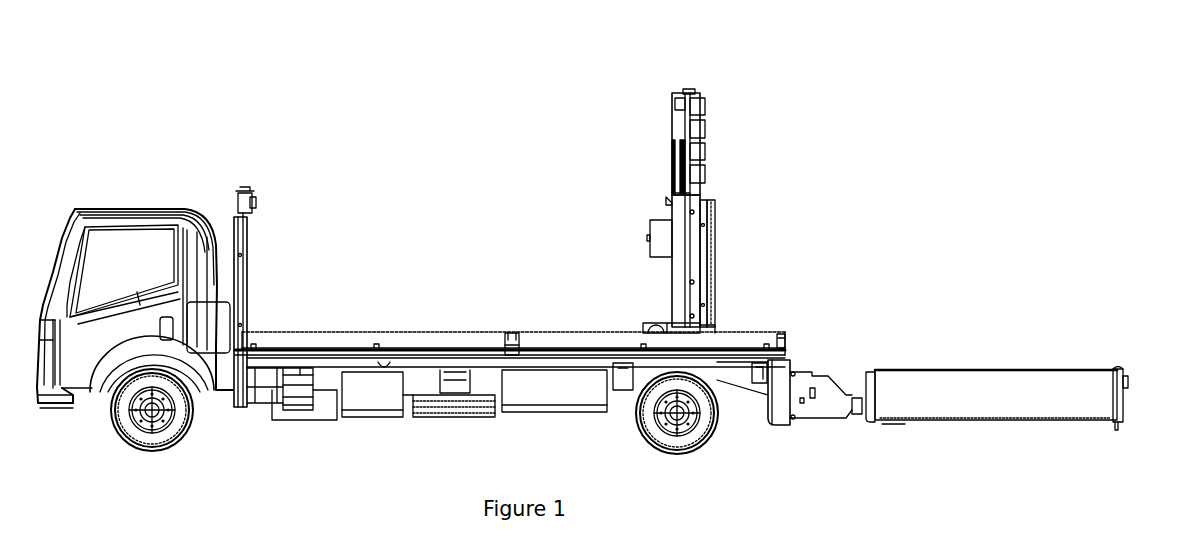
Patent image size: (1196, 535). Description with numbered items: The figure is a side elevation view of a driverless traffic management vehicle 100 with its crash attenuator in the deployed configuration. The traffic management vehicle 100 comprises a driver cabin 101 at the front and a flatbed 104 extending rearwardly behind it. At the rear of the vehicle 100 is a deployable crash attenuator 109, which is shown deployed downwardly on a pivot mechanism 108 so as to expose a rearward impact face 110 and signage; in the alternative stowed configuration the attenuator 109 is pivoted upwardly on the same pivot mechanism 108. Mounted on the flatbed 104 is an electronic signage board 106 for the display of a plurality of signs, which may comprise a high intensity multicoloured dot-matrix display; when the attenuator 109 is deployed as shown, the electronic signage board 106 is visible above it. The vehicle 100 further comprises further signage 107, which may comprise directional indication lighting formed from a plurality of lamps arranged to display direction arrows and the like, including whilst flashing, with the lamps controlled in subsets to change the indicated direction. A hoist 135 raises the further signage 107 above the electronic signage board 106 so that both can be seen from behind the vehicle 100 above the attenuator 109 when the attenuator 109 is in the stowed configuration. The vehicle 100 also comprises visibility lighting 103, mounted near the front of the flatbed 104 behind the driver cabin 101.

The traffic management vehicle 100 is at (843, 84).
The driver cabin 101 is at (153, 208).
The visibility lighting 103 is at (248, 186).
The flatbed 104 is at (470, 332).
The electronic signage board 106 is at (716, 260).
The further signage 107 is at (706, 103).
The hoist 135 is at (670, 103).
The pivot mechanism 108 is at (848, 411).
The deployable crash attenuator 109 is at (1013, 371).
The rearward impact face 110 is at (1128, 399).